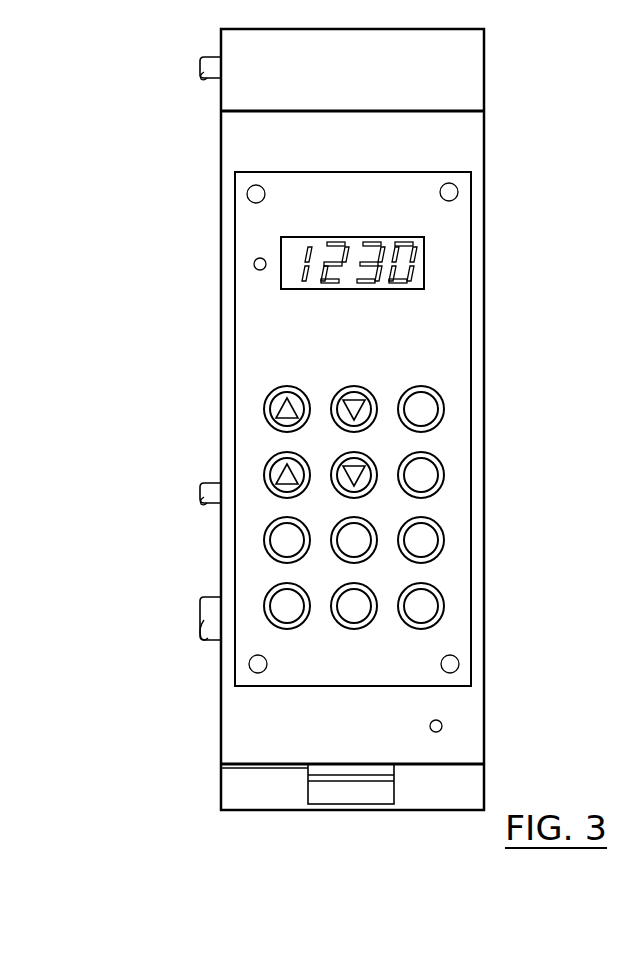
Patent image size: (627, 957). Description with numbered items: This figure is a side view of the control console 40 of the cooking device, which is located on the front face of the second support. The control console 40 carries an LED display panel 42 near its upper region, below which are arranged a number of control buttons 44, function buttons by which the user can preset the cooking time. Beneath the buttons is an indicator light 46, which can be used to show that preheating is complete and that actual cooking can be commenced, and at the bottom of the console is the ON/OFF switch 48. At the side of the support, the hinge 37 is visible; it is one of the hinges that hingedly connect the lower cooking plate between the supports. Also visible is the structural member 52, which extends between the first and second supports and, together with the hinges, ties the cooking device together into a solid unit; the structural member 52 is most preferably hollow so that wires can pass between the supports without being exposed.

The hinge 37 is at (210, 490).
The control console 40 is at (460, 347).
The LED display panel 42 is at (422, 272).
The control buttons 44 is at (432, 543).
The indicator light 46 is at (442, 726).
The ON/OFF switch 48 is at (363, 792).
The structural member 52 is at (208, 640).